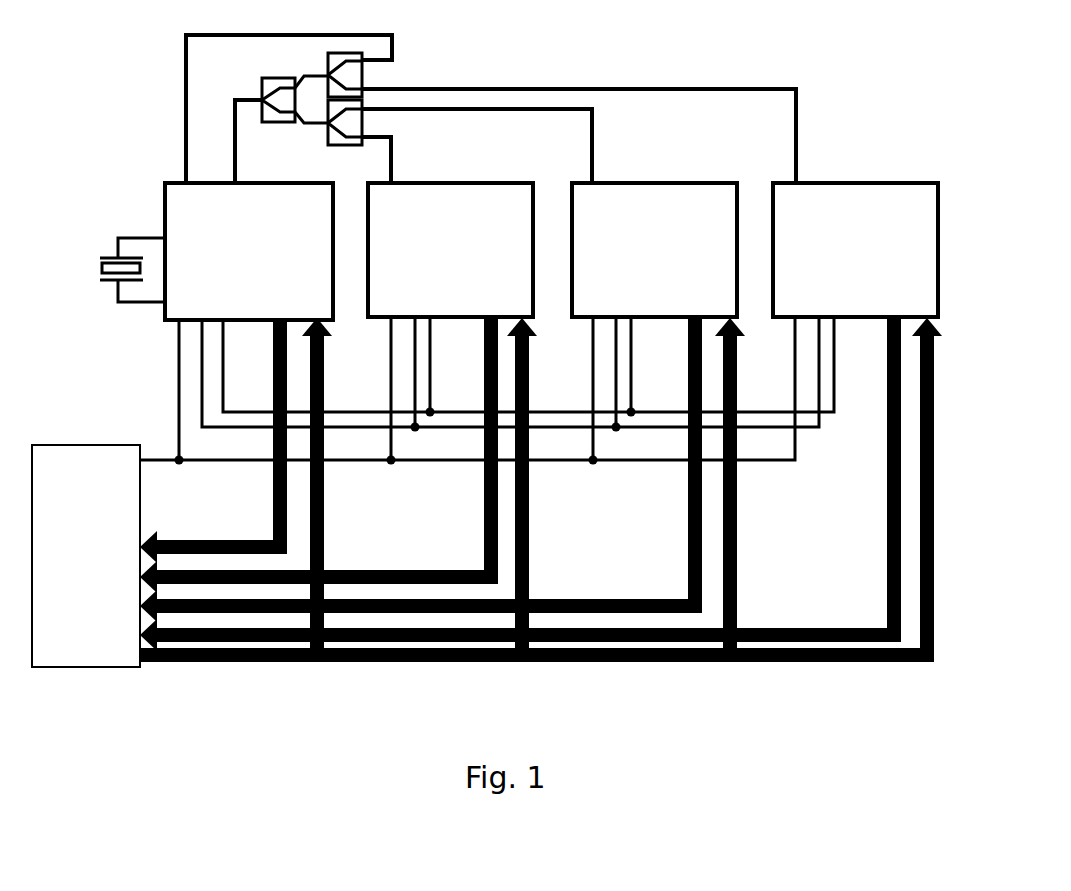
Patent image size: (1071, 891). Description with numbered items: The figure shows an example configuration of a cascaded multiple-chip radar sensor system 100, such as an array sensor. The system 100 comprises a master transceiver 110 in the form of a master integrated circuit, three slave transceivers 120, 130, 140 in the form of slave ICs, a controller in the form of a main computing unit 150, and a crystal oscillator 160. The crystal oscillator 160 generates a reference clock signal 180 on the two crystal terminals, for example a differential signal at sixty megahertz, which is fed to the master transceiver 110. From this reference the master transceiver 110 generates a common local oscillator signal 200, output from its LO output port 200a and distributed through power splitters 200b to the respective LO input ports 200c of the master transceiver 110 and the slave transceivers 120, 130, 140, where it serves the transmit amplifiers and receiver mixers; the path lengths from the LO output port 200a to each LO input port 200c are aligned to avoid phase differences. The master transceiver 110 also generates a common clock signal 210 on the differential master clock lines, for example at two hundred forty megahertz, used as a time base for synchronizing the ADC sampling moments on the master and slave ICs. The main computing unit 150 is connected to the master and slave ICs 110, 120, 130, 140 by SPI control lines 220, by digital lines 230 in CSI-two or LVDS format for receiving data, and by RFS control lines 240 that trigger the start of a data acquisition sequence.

The cascaded multiple-chip radar sensor system 100 is at (86, 59).
The master transceiver 110 is at (249, 251).
The slave transceiver 120 is at (450, 250).
The slave transceiver 130 is at (654, 250).
The slave transceiver 140 is at (855, 250).
The main computing unit 150 is at (86, 556).
The crystal oscillator 160 is at (102, 269).
The reference clock signal 180 is at (104, 236).
The common local oscillator signal 200 is at (403, 30).
The LO output port 200a is at (220, 118).
The power splitter 200b is at (267, 74).
The LO input port 200c is at (164, 167).
The common clock signal 210 is at (836, 425).
The SPI control lines 220 is at (421, 666).
The digital lines 230 is at (169, 531).
The RFS control lines 240 is at (558, 466).